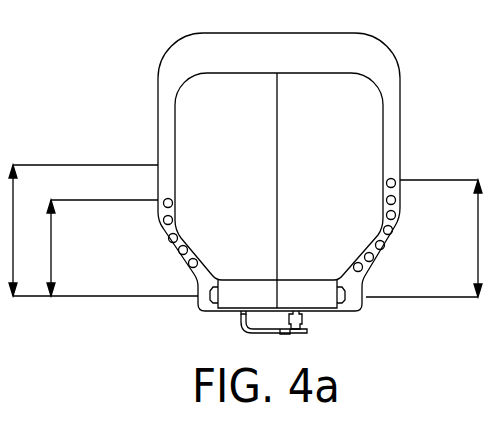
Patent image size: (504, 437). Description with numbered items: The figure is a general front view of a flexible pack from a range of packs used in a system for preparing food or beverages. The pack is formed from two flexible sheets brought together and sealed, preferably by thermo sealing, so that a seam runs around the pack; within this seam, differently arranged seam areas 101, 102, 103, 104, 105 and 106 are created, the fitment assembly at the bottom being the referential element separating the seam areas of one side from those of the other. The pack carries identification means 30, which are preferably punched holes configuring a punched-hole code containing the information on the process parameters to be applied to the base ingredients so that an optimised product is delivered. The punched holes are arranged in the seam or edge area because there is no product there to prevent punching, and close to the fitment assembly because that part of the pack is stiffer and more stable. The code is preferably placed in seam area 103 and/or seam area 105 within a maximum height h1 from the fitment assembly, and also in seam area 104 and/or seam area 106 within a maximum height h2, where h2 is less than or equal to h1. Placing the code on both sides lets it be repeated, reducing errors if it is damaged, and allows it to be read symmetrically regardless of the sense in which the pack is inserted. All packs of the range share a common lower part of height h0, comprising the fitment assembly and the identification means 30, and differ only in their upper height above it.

The seam area 101 is at (393, 106).
The seam area 102 is at (162, 102).
The seam area 103 is at (396, 193).
The seam area 104 is at (173, 180).
The seam area 105 is at (389, 250).
The seam area 106 is at (176, 257).
The identification means 30 is at (185, 259).
The height of the common lower part h0 is at (103, 230).
The maximum height h1 is at (435, 238).
The maximum height h2 is at (102, 248).